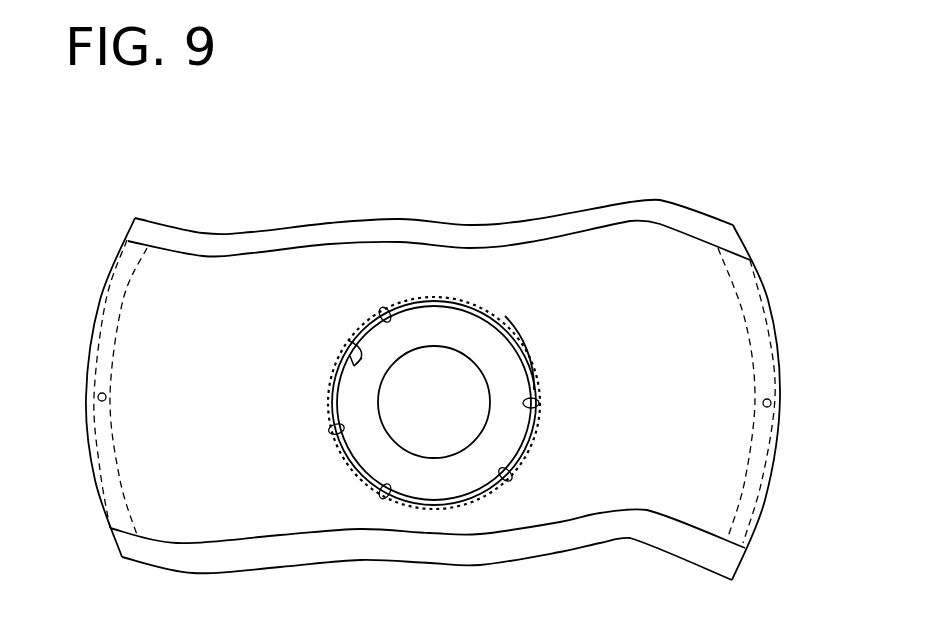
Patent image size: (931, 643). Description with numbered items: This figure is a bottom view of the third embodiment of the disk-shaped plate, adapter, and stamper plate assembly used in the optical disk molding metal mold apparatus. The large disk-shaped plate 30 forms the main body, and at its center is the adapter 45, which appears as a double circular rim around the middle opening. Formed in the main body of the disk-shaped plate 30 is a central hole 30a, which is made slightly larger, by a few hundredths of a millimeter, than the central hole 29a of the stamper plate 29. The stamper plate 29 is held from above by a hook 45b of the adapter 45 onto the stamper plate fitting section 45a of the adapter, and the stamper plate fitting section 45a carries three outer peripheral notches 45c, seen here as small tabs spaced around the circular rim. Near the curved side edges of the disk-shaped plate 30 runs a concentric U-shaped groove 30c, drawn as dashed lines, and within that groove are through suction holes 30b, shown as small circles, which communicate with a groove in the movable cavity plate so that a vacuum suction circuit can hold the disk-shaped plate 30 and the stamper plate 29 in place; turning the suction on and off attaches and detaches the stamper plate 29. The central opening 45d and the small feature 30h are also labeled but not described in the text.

The stamper plate 29 is at (252, 243).
The central hole of the stamper plate 29a is at (348, 340).
The disk-shaped plate 30 is at (552, 243).
The central hole 30a is at (505, 472).
The through suction holes 30b is at (106, 398).
The U-shaped groove 30c is at (116, 343).
The hole 30h is at (337, 426).
The adapter 45 is at (450, 322).
The stamper plate fitting section 45a is at (527, 357).
The hook 45b is at (507, 318).
The outer peripheral notches 45c is at (385, 312).
The opening 45d is at (470, 443).